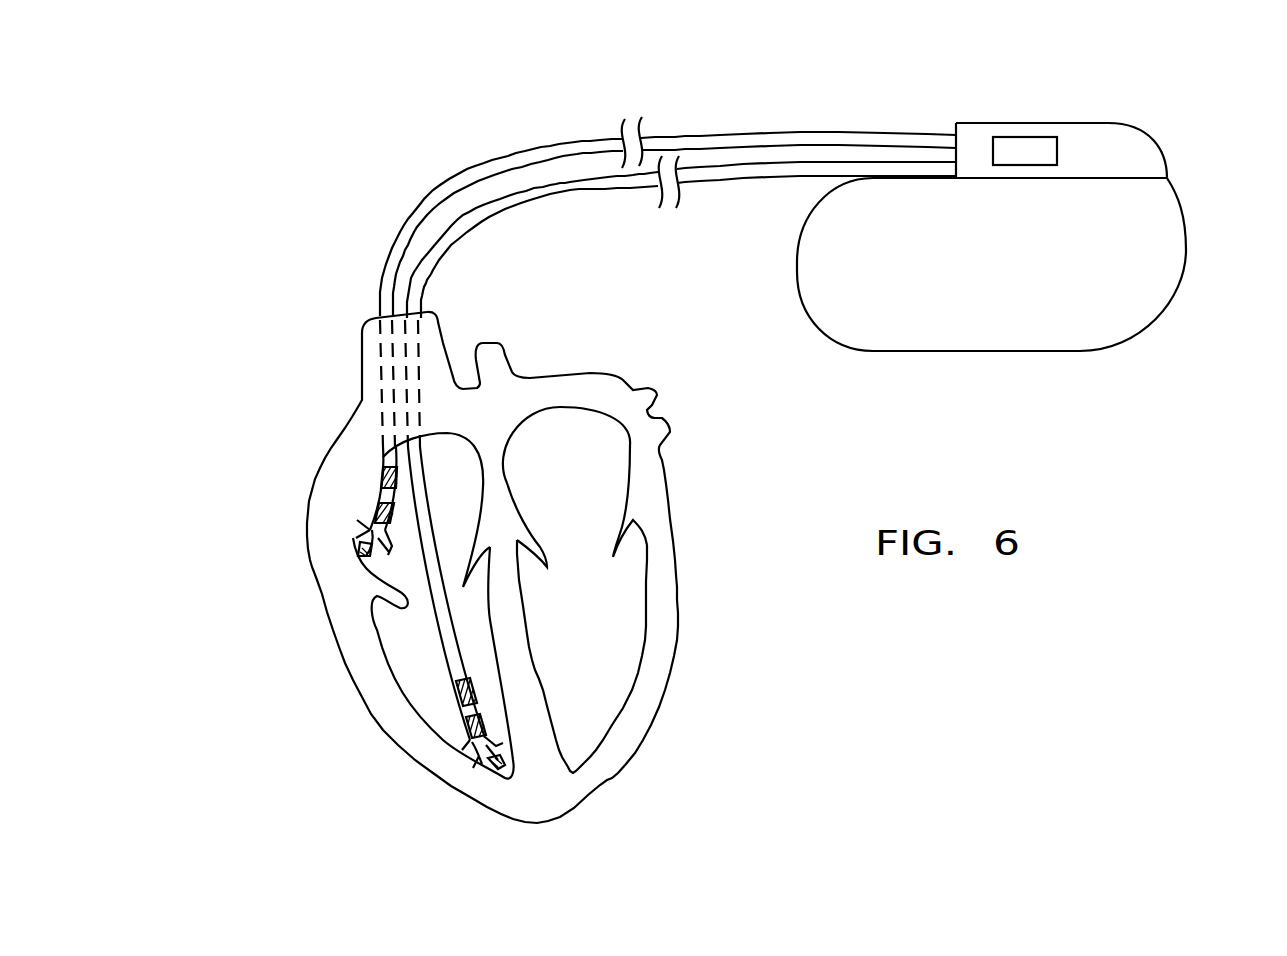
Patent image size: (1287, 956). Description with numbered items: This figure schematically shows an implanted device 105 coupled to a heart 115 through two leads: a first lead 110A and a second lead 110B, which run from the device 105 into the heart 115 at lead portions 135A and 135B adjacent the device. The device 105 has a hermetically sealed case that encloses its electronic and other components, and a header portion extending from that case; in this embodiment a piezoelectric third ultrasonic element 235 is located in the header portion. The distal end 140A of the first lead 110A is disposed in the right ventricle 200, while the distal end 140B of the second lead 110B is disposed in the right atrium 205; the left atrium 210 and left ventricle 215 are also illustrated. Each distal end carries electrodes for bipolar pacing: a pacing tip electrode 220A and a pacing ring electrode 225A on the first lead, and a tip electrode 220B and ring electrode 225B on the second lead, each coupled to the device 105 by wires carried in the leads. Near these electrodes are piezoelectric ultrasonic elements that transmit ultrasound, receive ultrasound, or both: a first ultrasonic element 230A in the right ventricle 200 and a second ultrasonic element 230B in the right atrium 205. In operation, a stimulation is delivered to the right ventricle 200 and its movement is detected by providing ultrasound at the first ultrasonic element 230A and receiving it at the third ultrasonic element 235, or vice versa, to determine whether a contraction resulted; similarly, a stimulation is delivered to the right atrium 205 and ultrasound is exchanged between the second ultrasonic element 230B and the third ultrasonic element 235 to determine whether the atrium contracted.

The device 105 is at (1186, 245).
The first lead 110A is at (562, 204).
The second lead 110B is at (545, 151).
The heart 115 is at (680, 602).
The first lead connector 135A is at (797, 180).
The second lead connector 135B is at (907, 127).
The distal end of first lead 140A is at (448, 759).
The distal end of second lead 140B is at (341, 523).
The right ventricle 200 is at (433, 647).
The right atrium 205 is at (475, 493).
The left atrium 210 is at (592, 491).
The left ventricle 215 is at (608, 631).
The pacing tip electrode 220A is at (497, 766).
The tip electrode 220B is at (357, 548).
The pacing ring electrode 225A is at (476, 735).
The ring electrode 225B is at (382, 508).
The first ultrasonic element 230A is at (458, 692).
The second ultrasonic element 230B is at (383, 478).
The third ultrasonic element 235 is at (1025, 146).